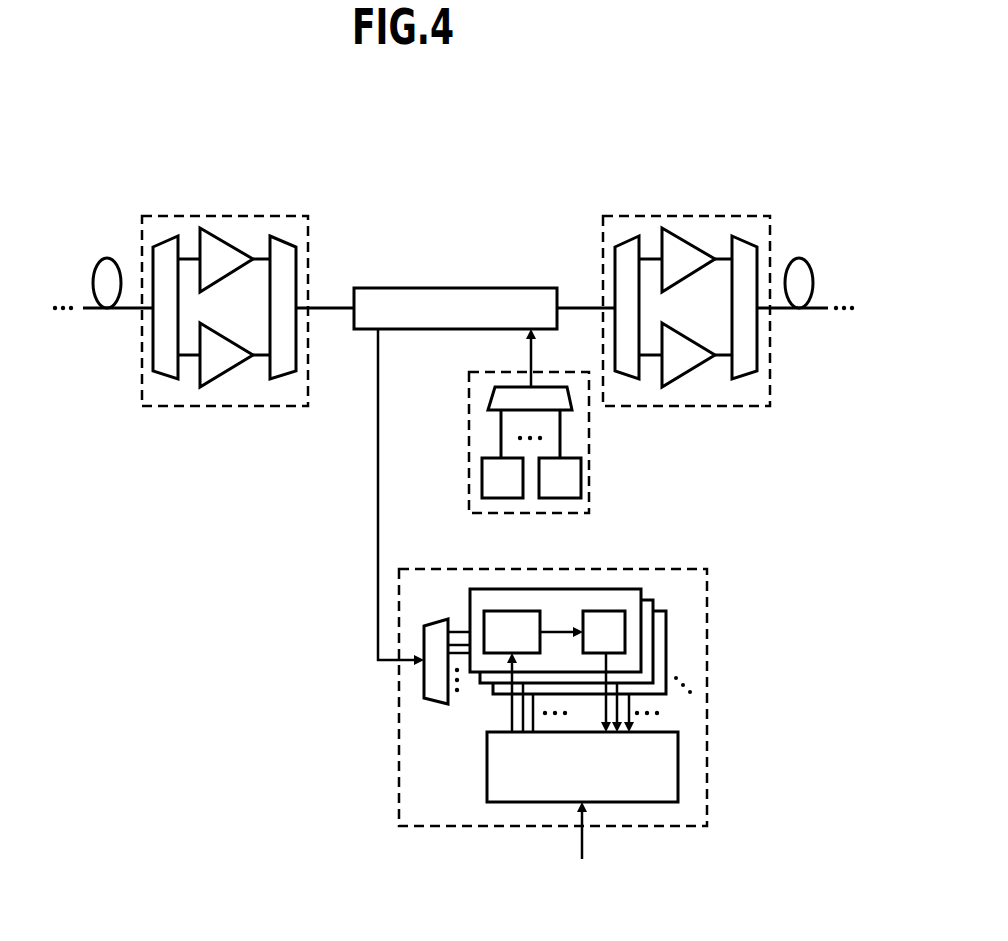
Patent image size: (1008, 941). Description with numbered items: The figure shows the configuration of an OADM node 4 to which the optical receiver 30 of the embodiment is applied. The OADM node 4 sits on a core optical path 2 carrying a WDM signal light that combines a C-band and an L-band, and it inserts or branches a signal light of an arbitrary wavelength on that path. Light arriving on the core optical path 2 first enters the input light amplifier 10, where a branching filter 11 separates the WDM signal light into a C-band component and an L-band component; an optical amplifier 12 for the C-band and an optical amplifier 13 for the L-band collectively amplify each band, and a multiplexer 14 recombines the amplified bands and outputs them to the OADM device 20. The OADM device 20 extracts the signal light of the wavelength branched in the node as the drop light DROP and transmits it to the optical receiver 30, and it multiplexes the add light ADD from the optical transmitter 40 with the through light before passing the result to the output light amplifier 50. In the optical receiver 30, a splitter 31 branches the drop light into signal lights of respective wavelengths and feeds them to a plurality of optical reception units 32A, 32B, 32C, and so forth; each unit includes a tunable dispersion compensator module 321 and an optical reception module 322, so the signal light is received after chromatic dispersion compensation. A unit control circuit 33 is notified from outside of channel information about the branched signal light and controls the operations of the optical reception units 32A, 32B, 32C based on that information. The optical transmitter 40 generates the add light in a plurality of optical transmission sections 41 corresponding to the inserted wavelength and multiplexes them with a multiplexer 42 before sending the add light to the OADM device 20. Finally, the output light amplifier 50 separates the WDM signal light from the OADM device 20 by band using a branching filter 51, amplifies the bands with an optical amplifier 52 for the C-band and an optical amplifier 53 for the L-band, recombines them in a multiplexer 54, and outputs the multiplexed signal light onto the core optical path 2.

The core optical path 2 is at (105, 258).
The OADM node 4 is at (364, 145).
The input light amplifier 10 is at (240, 280).
The branching filter 11 is at (157, 250).
The optical amplifier for the C-band 12 is at (215, 240).
The optical amplifier for the L-band 13 is at (225, 338).
The multiplexer 14 is at (280, 240).
The OADM device 20 is at (437, 288).
The optical receiver 30 is at (549, 679).
The splitter 31 is at (424, 678).
The optical reception unit 32A is at (613, 602).
The optical reception unit 32B is at (653, 600).
The optical reception unit 32C is at (666, 611).
The tunable dispersion compensator module 321 is at (512, 611).
The optical reception module 322 is at (600, 611).
The unit control circuit 33 is at (678, 760).
The optical transmitter 40 is at (533, 442).
The optical transmission section 41 is at (482, 480).
The multiplexer 42 is at (490, 397).
The output light amplifier 50 is at (681, 280).
The branching filter 51 is at (620, 250).
The optical amplifier for the C-band 52 is at (678, 240).
The optical amplifier for the L-band 53 is at (688, 338).
The multiplexer 54 is at (742, 240).